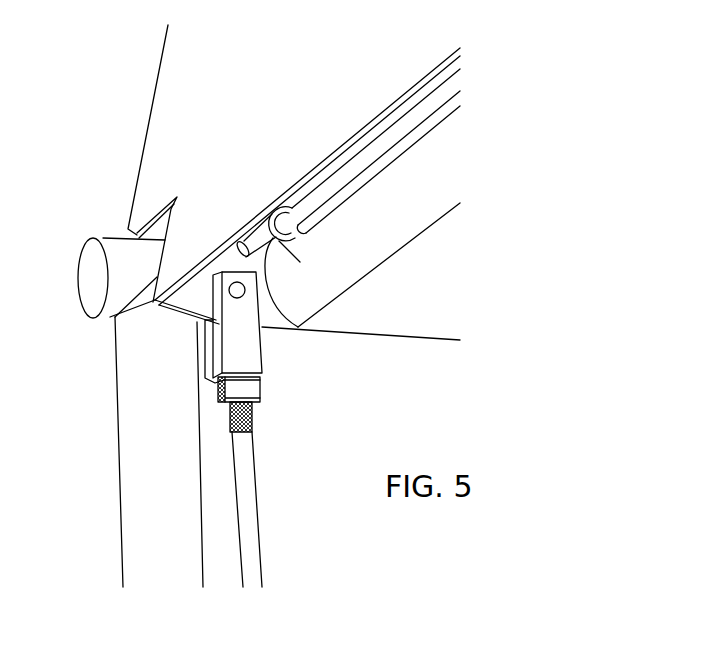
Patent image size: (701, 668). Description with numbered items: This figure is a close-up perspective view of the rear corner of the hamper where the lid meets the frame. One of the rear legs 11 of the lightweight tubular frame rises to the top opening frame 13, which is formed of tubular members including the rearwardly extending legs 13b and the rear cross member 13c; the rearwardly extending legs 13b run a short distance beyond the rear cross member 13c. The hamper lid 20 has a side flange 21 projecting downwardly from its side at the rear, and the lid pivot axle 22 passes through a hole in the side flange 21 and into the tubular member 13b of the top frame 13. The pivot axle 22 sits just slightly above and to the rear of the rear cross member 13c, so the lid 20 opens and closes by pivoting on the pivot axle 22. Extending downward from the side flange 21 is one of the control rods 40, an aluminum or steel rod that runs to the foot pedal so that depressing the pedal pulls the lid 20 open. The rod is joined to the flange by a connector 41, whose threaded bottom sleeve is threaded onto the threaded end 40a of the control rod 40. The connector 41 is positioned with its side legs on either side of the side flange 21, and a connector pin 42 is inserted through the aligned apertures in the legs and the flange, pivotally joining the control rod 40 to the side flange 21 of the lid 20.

The rear legs 11 is at (137, 472).
The top opening frame 13 is at (395, 258).
The rearwardly extending legs 13b is at (410, 320).
The rear cross member 13c is at (383, 232).
The hamper lid 20 is at (158, 125).
The side flanges 21 is at (185, 292).
The lid pivot axle 22 is at (402, 127).
The control rods 40 is at (268, 544).
The threaded end 40a is at (250, 417).
The connector 41 is at (248, 347).
The connector pin 42 is at (243, 288).